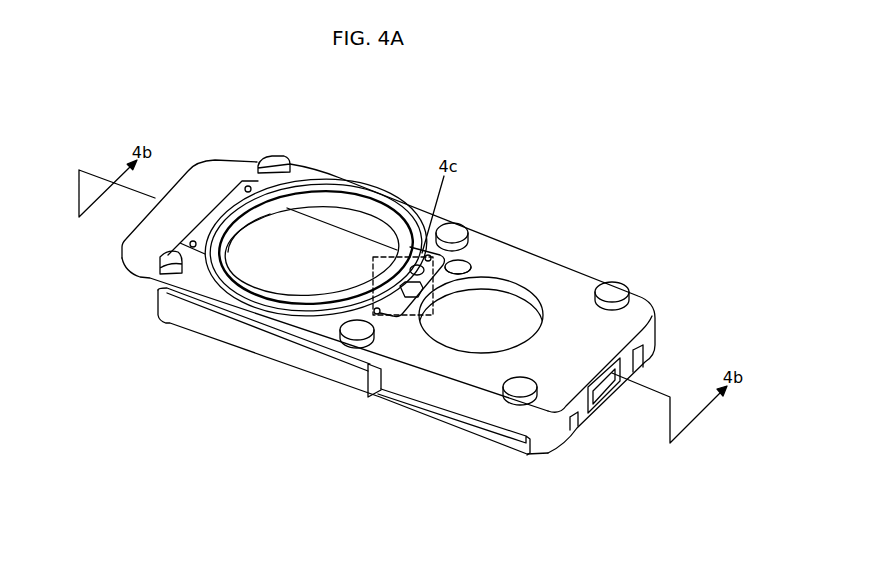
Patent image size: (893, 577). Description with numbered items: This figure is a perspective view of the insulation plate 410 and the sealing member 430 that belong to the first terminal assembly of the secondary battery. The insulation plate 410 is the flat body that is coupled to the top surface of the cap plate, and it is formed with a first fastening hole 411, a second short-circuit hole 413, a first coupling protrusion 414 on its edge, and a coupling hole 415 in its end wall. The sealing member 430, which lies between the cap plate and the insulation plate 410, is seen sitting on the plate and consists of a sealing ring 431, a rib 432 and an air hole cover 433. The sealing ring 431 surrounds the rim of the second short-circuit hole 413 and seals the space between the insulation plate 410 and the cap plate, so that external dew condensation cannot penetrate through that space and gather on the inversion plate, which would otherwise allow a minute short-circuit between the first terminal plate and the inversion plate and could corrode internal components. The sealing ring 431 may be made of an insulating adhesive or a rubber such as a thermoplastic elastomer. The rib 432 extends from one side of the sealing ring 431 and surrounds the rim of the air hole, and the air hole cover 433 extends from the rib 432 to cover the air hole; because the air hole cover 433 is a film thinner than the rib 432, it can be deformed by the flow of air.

The insulation plate 410 is at (570, 290).
The first fastening hole 411 is at (500, 280).
The second short-circuit hole 413 is at (337, 203).
The first coupling protrusion 414 is at (271, 158).
The coupling hole 415 is at (602, 392).
The sealing member 430 is at (306, 327).
The sealing ring 431 is at (253, 307).
The rib 432 is at (345, 313).
The air hole cover 433 is at (410, 290).